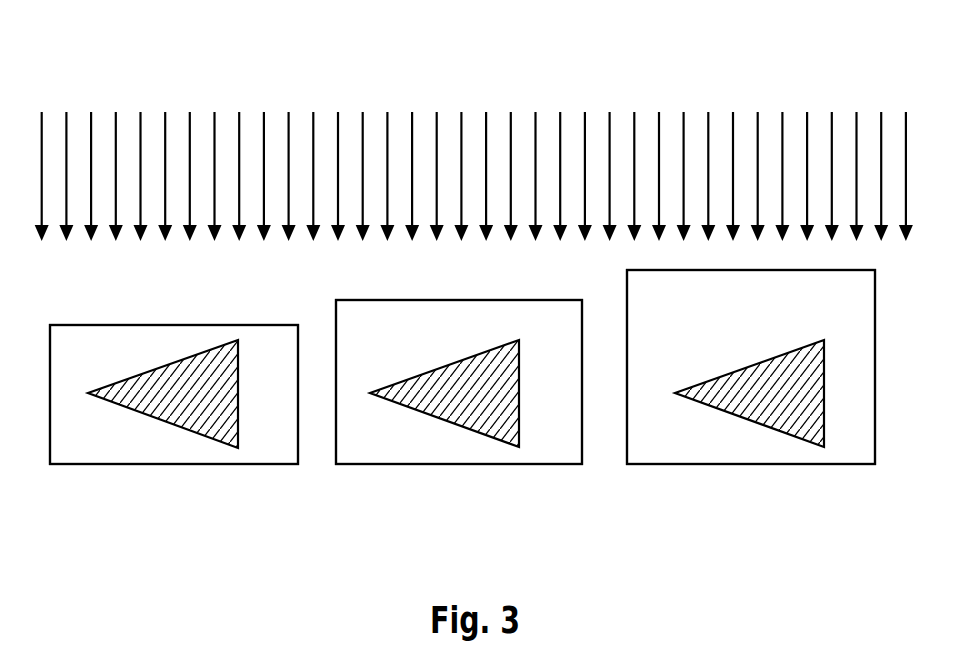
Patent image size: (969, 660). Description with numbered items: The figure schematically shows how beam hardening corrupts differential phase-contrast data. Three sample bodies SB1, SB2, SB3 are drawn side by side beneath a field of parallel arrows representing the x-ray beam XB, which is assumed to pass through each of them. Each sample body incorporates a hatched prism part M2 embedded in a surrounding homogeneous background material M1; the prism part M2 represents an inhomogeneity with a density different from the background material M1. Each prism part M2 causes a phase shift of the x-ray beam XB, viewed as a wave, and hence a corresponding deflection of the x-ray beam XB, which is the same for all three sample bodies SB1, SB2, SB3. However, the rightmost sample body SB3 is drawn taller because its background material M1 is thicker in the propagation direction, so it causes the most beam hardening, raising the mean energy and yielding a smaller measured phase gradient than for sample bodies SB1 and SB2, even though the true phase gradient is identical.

The x-ray beam XB is at (560, 102).
The first sample body SB1 is at (185, 452).
The second sample body SB2 is at (395, 446).
The third sample body SB3 is at (657, 443).
The background material M1 is at (462, 367).
The prism part M2 is at (456, 394).